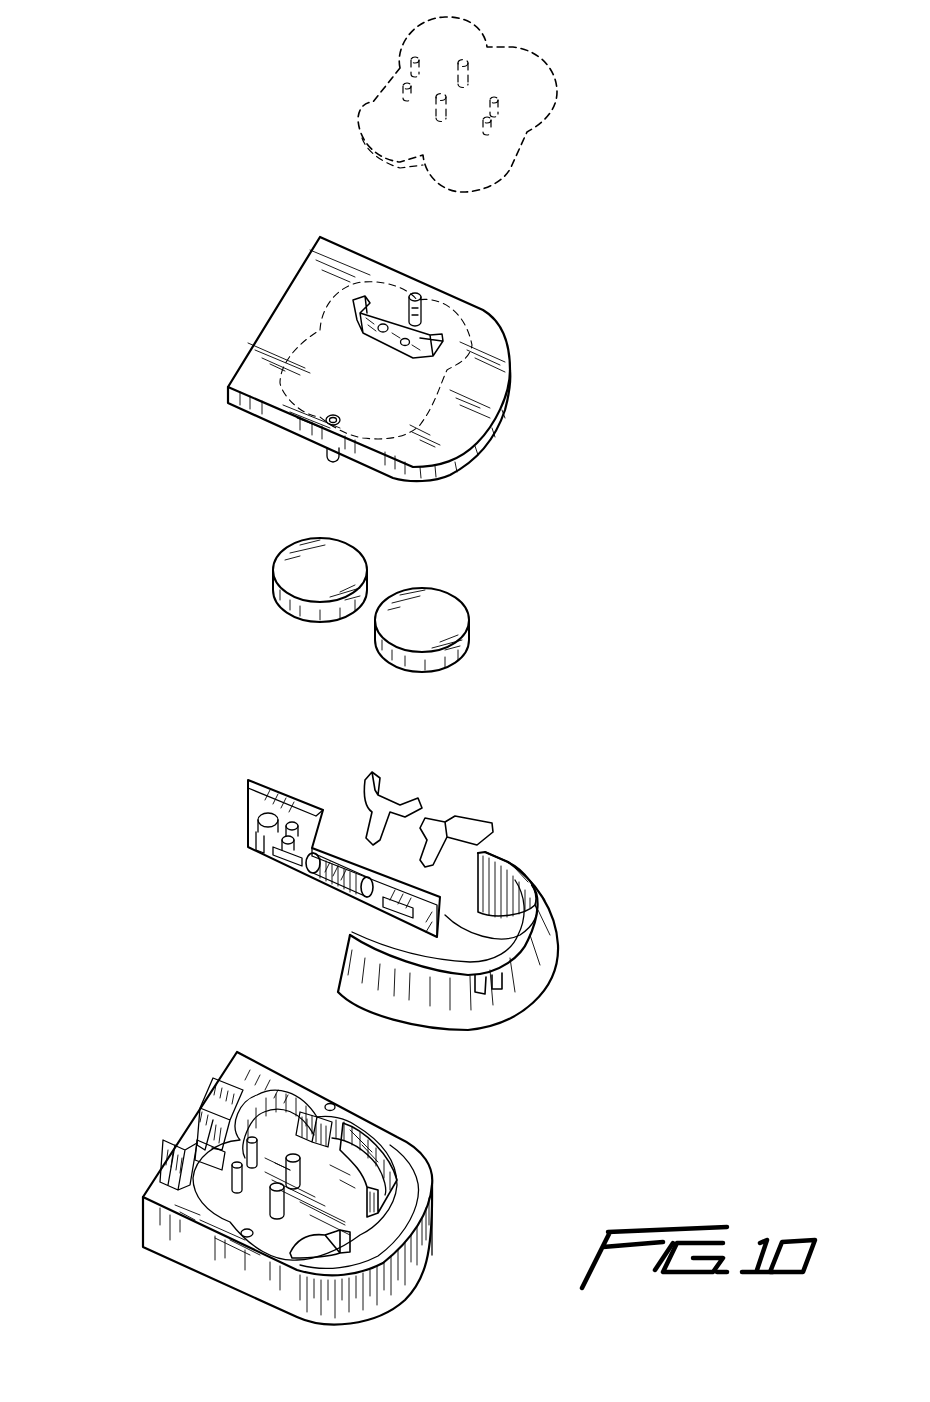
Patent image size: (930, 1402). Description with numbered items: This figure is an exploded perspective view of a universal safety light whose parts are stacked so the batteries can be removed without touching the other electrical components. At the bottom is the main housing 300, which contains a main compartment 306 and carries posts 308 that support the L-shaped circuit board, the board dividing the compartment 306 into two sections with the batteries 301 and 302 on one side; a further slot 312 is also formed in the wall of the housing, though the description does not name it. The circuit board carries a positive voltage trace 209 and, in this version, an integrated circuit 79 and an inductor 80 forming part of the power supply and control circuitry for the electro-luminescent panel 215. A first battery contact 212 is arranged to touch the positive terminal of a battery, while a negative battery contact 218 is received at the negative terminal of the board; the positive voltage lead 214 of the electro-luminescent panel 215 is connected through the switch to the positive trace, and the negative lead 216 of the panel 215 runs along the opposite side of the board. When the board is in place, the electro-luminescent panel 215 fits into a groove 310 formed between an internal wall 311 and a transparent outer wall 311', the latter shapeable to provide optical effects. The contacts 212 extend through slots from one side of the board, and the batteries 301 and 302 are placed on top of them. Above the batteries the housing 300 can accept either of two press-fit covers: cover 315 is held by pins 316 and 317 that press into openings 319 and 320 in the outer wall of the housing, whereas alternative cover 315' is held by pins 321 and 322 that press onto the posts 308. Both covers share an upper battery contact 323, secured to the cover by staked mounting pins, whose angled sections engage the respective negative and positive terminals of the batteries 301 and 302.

The main housing 300 is at (448, 1238).
The battery 301 is at (277, 570).
The battery 302 is at (458, 610).
The compartment 306 is at (353, 1165).
The posts 308 is at (273, 1203).
The groove 310 is at (410, 1187).
The internal wall 311 is at (262, 1289).
The transparent outer wall 311' is at (469, 1249).
The slot 312 is at (195, 1143).
The press-fit cover 315 is at (413, 359).
The alternative cover 315' is at (504, 104).
The pin 316 is at (421, 315).
The pin 317 is at (327, 455).
The opening 319 is at (247, 1233).
The opening 320 is at (335, 1107).
The pin 321 is at (440, 118).
The pin 322 is at (467, 78).
The upper battery contact 323 is at (363, 313).
The positive voltage trace 209 is at (267, 780).
The first battery contact 212 is at (377, 770).
The positive voltage lead 214 is at (485, 928).
The electro-luminescent panel 215 is at (537, 957).
The negative lead 216 is at (475, 968).
The negative battery contact 218 is at (460, 822).
The integrated circuit 79 is at (263, 820).
The inductor 80 is at (327, 880).